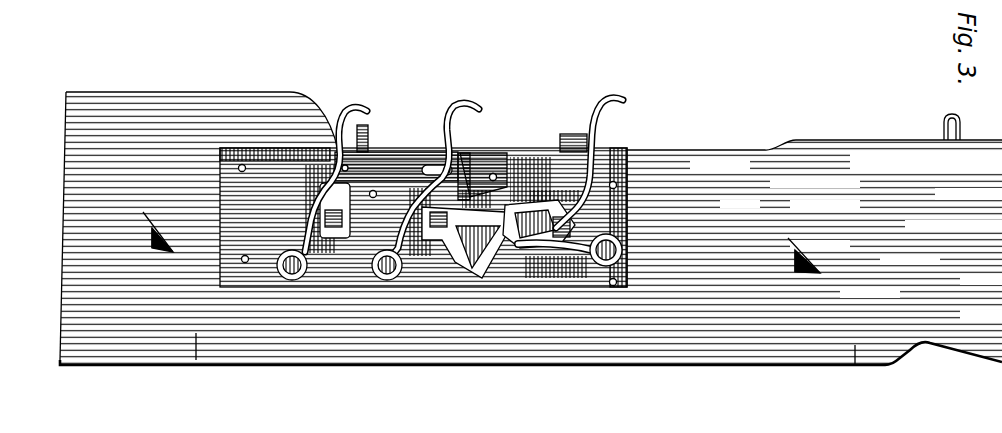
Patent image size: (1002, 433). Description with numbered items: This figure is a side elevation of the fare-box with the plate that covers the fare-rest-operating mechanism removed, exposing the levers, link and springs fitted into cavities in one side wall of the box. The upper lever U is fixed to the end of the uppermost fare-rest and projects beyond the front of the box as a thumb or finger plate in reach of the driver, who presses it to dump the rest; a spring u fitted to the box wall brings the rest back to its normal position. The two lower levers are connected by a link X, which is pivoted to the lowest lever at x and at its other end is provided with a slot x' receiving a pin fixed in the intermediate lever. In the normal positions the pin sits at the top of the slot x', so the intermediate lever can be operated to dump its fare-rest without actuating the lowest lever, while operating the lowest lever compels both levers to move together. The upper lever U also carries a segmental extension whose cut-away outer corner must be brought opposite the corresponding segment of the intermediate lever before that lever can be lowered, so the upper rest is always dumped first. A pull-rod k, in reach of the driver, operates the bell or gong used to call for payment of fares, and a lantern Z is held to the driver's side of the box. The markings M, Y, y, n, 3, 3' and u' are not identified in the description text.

The hammer M is at (338, 124).
The link X is at (403, 155).
The slot x' is at (444, 160).
The stop block 3' is at (472, 127).
The spring u is at (498, 198).
The tumbler y is at (452, 242).
The frame n is at (529, 224).
The sear 3 is at (404, 209).
The pivot x is at (341, 193).
The hammer Y is at (458, 117).
The upper lever U is at (602, 128).
The spring arm u' is at (553, 262).
The pull-rod k is at (944, 118).
The lantern Z is at (965, 412).